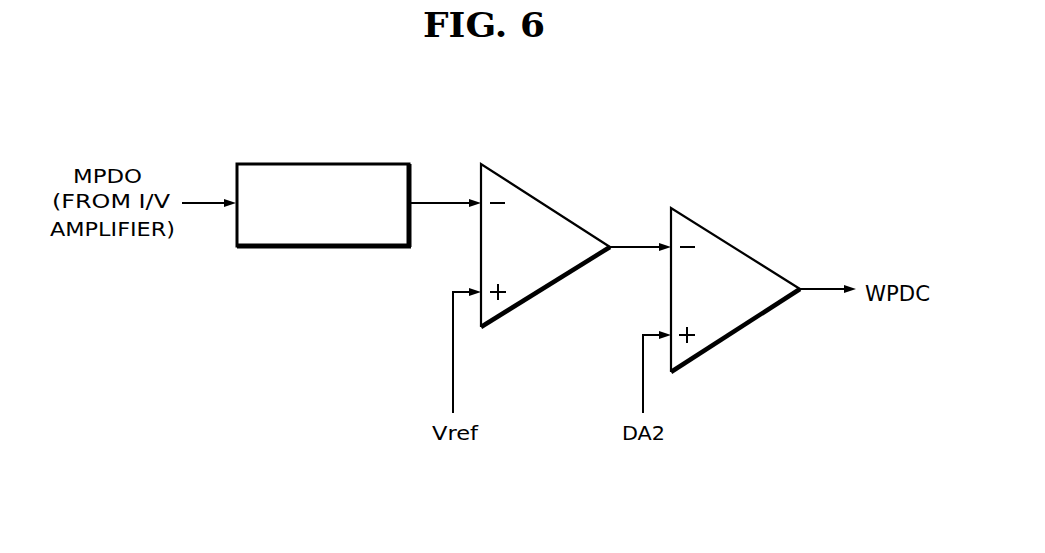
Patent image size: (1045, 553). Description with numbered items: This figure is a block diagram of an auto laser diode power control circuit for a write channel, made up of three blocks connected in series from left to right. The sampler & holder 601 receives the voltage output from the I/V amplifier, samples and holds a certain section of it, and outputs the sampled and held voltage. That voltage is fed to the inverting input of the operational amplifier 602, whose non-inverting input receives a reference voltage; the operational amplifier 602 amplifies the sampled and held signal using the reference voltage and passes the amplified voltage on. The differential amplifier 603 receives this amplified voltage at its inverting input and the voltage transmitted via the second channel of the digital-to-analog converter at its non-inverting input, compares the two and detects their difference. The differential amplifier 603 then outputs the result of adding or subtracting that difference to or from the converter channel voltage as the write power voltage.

The sampler & holder 601 is at (340, 163).
The operational amplifier 602 is at (548, 204).
The differential amplifier 603 is at (737, 250).